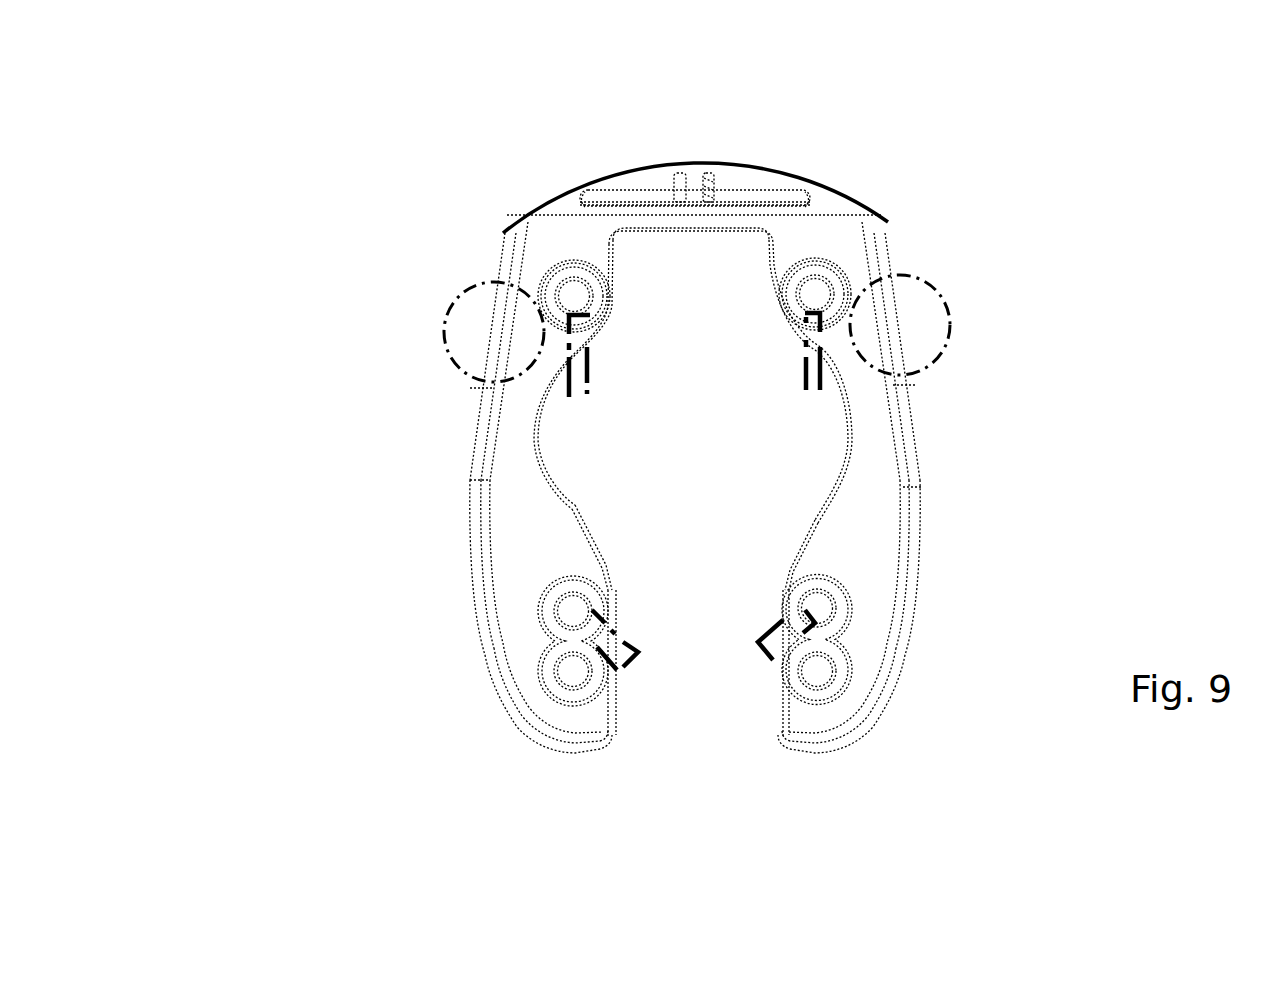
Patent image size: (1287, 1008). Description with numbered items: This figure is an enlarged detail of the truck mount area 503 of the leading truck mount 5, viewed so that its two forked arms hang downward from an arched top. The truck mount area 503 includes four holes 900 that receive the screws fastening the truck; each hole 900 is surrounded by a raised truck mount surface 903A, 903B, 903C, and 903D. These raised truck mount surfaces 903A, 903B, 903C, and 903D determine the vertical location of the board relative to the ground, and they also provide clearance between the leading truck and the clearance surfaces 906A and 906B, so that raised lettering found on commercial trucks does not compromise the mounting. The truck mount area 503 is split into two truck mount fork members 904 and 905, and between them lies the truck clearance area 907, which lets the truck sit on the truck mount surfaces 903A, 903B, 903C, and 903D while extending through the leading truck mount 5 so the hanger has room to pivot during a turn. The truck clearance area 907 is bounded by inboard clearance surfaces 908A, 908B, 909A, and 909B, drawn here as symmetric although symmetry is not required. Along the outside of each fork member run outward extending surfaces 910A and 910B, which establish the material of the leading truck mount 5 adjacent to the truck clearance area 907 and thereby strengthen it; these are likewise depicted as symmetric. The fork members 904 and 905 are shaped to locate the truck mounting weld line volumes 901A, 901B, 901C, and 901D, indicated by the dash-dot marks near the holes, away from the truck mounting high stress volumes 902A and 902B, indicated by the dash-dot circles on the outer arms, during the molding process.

The holes 900 is at (579, 666).
The truck mounting weld line volume 901A is at (626, 667).
The truck mounting weld line volume 901B is at (563, 360).
The truck mounting weld line volume 901C is at (827, 354).
The truck mounting weld line volume 901D is at (762, 655).
The truck mounting high stress volume 902A is at (493, 275).
The truck mounting high stress volume 902B is at (902, 266).
The raised truck mount surface 903A is at (562, 643).
The raised truck mount surface 903B is at (568, 272).
The raised truck mount surface 903C is at (820, 268).
The raised truck mount surface 903D is at (835, 644).
The truck mount fork member 904 is at (885, 722).
The truck mount fork member 905 is at (515, 733).
The clearance surface 906A is at (868, 585).
The clearance surface 906B is at (543, 563).
The truck clearance area 907 is at (692, 545).
The inboard clearance surface 908A is at (540, 438).
The inboard clearance surface 908B is at (840, 434).
The inboard clearance surface 909A is at (570, 488).
The inboard clearance surface 909B is at (823, 497).
The outward extending surface 910A is at (468, 480).
The outward extending surface 910B is at (928, 487).
The truck mount area 503 is at (1118, 313).
The leading truck mount 5 is at (878, 808).